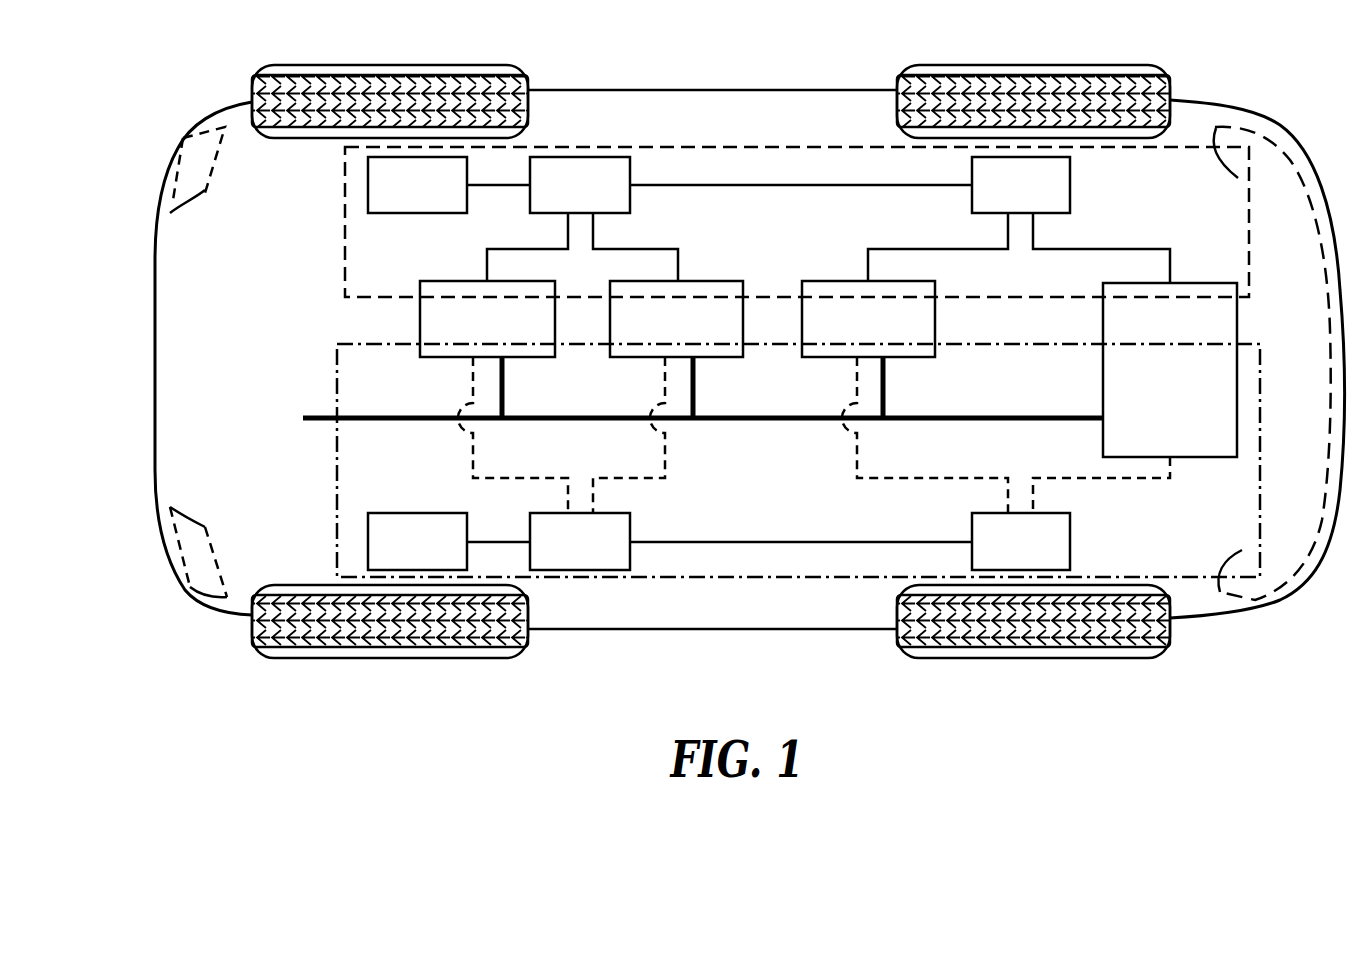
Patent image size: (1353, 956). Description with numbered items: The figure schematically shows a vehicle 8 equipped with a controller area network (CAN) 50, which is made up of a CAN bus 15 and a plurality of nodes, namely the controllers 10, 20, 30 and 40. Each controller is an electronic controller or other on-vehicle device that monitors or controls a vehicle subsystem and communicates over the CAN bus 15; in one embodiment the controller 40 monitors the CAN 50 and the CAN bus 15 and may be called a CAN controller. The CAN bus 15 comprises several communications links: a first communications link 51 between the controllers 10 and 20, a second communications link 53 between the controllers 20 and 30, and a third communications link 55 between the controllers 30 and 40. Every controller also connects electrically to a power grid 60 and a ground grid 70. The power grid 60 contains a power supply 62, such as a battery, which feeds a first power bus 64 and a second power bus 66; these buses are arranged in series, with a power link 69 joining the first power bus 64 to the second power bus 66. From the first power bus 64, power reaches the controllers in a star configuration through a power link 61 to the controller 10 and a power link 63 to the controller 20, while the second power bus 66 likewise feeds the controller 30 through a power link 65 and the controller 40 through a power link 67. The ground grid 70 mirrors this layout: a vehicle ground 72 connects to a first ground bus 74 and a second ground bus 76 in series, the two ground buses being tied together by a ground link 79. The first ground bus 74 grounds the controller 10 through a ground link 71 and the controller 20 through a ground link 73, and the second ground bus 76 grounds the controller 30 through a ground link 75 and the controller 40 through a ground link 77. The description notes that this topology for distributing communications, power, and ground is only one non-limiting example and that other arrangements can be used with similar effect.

The vehicle 8 is at (148, 360).
The controller 10 is at (467, 336).
The CAN bus 15 is at (983, 406).
The controller 20 is at (656, 336).
The controller 30 is at (848, 336).
The controller 40 is at (1150, 394).
The controller area network 50 is at (324, 408).
The first communications link 51 is at (612, 423).
The second communications link 53 is at (743, 423).
The third communications link 55 is at (1035, 423).
The power grid 60 is at (332, 303).
The power link 61 is at (485, 262).
The power supply 62 is at (397, 203).
The power link 63 is at (678, 270).
The first power bus 64 is at (560, 203).
The power link 65 is at (923, 247).
The second power bus 66 is at (1001, 203).
The power link 67 is at (1093, 248).
The power link 69 is at (778, 185).
The ground grid 70 is at (332, 495).
The ground link 71 is at (473, 448).
The vehicle ground 72 is at (397, 563).
The ground link 73 is at (668, 458).
The first ground bus 74 is at (560, 563).
The ground link 75 is at (923, 482).
The second ground bus 76 is at (1001, 563).
The ground link 77 is at (1097, 482).
The ground link 79 is at (717, 542).